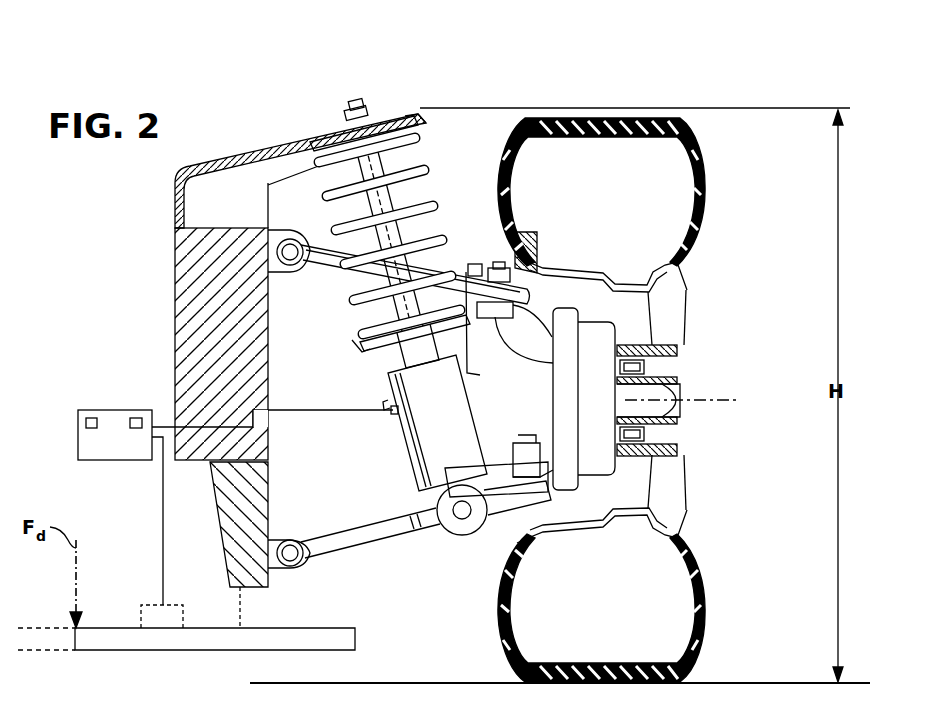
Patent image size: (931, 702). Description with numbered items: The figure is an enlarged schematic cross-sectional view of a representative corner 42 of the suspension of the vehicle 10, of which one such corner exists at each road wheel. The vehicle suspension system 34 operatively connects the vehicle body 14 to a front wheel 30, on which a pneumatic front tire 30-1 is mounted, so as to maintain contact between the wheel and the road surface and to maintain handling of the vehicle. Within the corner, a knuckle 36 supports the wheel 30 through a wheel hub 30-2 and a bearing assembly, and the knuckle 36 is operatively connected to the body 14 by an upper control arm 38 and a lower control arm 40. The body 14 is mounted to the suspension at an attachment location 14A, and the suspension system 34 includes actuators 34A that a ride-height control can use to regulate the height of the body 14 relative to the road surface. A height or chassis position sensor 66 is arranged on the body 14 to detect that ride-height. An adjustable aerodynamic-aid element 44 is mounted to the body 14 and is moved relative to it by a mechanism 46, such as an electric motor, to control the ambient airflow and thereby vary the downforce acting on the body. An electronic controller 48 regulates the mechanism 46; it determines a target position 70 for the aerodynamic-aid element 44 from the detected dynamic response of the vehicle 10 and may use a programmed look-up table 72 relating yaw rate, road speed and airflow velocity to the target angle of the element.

The vehicle 10 is at (275, 122).
The vehicle body 14 is at (336, 106).
The mount attachment point 14A is at (407, 111).
The vehicle suspension system 34 is at (306, 214).
The actuators 34A is at (435, 407).
The knuckle 36 is at (598, 344).
The upper control arm 38 is at (453, 277).
The lower control arm 40 is at (372, 532).
The representative corner 42 is at (530, 89).
The front wheel 30 is at (684, 495).
The front tire 30-1 is at (703, 585).
The wheel hub 30-2 is at (690, 402).
The adjustable aerodynamic-aid element 44 is at (128, 628).
The mechanism 46 is at (178, 605).
The electronic controller 48 is at (238, 505).
The height or chassis position sensor 66 is at (482, 292).
The target position 70 is at (140, 418).
The look-up table 72 is at (92, 418).